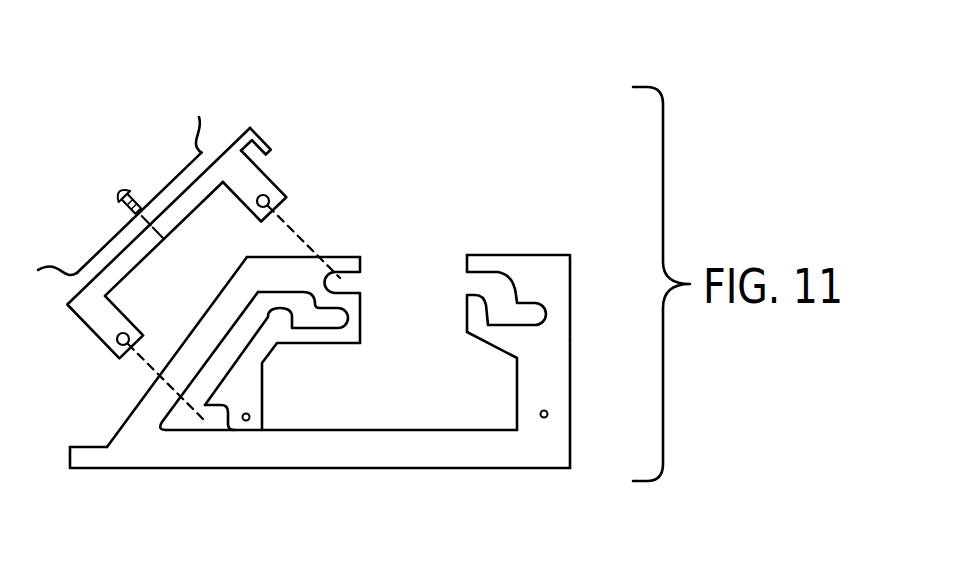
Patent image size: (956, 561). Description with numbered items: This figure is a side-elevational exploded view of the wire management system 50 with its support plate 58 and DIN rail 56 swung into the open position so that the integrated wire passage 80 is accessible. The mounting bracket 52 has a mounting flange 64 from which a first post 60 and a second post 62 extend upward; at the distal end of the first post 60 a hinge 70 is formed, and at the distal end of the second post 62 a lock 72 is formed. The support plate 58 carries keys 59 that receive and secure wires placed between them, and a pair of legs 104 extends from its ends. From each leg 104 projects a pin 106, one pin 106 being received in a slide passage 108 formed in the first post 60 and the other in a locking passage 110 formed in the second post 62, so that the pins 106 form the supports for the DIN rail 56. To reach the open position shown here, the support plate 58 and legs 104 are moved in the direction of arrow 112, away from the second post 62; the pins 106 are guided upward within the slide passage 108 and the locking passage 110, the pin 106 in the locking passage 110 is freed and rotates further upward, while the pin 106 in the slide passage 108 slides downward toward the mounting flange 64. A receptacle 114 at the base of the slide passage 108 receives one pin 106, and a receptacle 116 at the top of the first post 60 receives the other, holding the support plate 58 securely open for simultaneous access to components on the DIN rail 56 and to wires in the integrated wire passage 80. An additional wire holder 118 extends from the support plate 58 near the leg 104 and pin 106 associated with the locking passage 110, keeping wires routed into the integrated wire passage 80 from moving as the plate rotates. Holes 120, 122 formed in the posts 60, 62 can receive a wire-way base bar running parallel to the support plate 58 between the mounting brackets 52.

The wire management system 50 is at (519, 151).
The mounting bracket 52 is at (580, 293).
The DIN rail 56 is at (174, 177).
The support plate 58 is at (228, 148).
The keys 59 is at (254, 104).
The first post 60 is at (149, 383).
The second post 62 is at (563, 384).
The mounting flange 64 is at (354, 456).
The hinge 70 is at (330, 352).
The lock 72 is at (446, 298).
The integrated wire passage 80 is at (473, 410).
The legs 104 is at (233, 213).
The pin 106 is at (268, 196).
The slide passage 108 is at (187, 411).
The locking passage 110 is at (499, 300).
The arrow 112 is at (221, 258).
The receptacle 114 is at (214, 427).
The receptacle 116 is at (349, 282).
The wire holder 118 is at (269, 146).
The hole 120 is at (548, 413).
The hole 122 is at (250, 416).